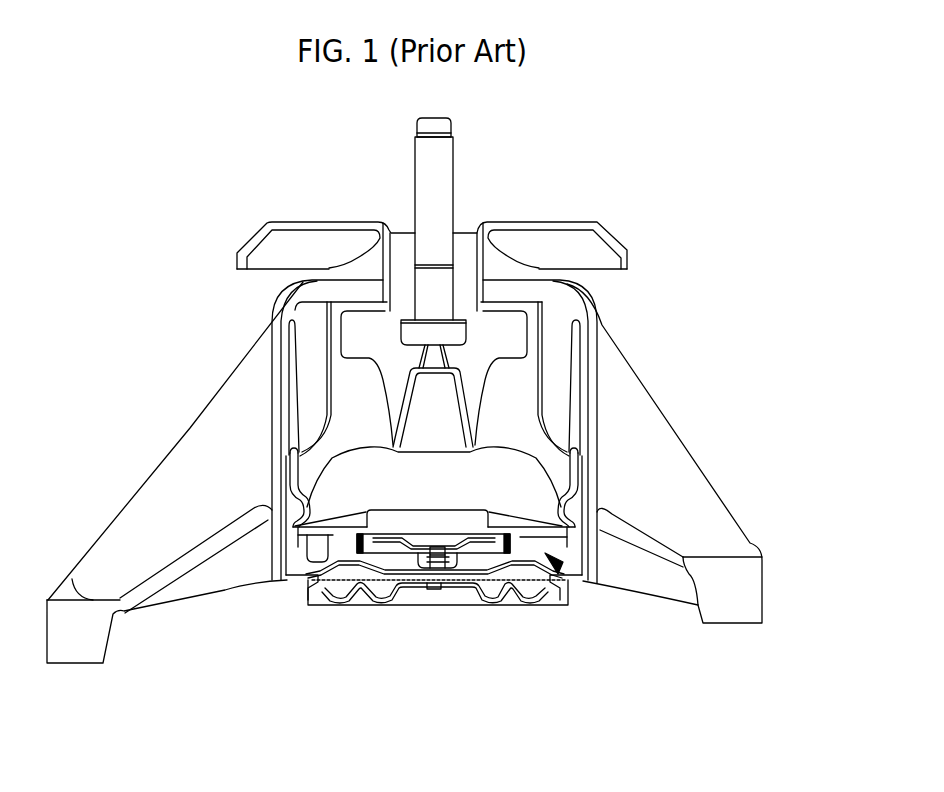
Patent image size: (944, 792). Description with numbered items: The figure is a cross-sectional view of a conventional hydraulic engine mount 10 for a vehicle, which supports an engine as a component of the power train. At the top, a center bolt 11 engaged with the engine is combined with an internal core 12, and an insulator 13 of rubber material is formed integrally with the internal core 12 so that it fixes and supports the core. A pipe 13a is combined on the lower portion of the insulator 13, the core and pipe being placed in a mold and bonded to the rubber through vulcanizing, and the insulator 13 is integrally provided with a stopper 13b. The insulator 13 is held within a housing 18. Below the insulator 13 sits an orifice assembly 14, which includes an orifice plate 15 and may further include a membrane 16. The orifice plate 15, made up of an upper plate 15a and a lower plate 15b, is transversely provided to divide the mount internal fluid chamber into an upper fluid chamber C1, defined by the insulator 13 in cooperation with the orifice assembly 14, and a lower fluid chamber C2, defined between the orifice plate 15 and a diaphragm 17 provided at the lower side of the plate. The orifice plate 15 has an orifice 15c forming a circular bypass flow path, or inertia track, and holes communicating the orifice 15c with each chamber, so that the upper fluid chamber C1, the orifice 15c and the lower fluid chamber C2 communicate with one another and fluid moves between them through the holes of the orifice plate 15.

The mount 10 is at (681, 243).
The center bolt 11 is at (454, 177).
The internal core 12 is at (504, 320).
The insulator 13 is at (530, 405).
The pipe 13a is at (580, 492).
The stopper 13b is at (330, 333).
The orifice assembly 14 is at (568, 593).
The orifice plate 15 is at (324, 584).
The upper plate 15a is at (353, 529).
The lower plate 15b is at (347, 555).
The orifice 15c is at (313, 548).
The membrane 16 is at (450, 553).
The diaphragm 17 is at (530, 600).
The housing 18 is at (598, 412).
The upper fluid chamber C1 is at (350, 482).
The lower fluid chamber C2 is at (338, 593).